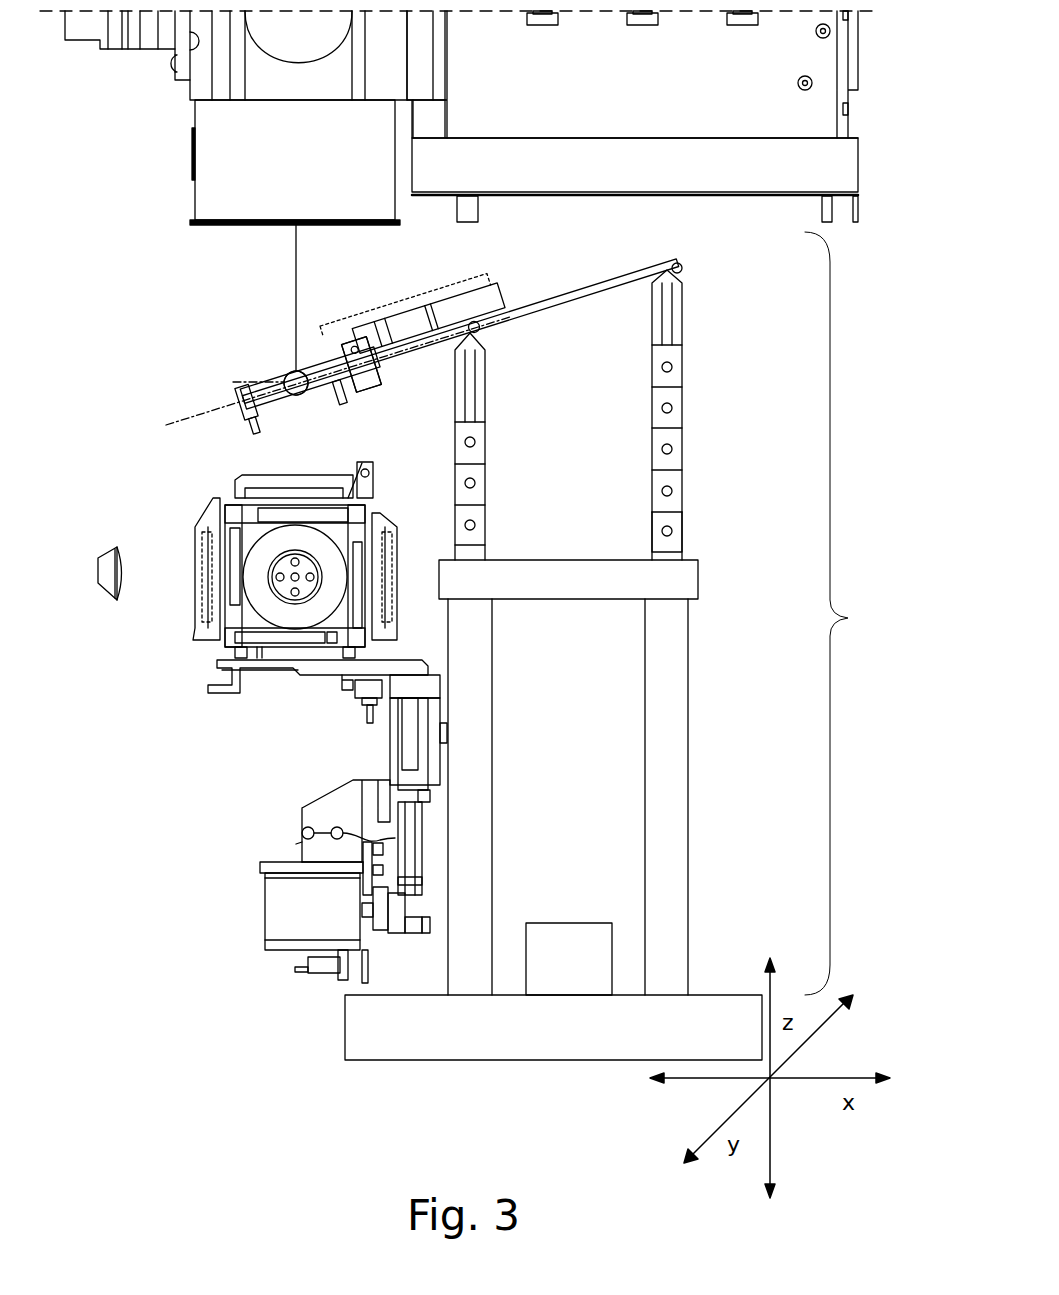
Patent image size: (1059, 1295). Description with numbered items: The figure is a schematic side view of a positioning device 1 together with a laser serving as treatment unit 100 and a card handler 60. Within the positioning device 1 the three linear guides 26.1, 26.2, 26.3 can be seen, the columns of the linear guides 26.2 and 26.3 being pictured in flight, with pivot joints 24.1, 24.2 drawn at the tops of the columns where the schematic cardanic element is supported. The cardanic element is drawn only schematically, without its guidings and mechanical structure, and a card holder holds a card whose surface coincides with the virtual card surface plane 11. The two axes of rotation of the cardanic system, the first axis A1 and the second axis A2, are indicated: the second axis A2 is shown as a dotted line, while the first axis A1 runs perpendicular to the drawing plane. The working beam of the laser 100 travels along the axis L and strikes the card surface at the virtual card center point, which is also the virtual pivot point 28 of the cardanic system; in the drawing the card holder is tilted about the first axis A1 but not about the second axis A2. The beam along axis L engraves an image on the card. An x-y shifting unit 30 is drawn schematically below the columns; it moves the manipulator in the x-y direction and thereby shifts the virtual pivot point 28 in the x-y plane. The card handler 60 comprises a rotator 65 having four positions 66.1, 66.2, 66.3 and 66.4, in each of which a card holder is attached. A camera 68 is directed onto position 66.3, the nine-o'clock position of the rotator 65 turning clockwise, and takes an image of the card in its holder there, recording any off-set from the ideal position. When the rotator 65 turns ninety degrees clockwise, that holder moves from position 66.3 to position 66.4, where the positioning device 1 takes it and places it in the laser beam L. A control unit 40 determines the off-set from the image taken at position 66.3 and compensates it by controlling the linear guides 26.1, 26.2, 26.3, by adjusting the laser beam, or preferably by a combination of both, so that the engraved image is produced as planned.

The positioning device 1 is at (853, 613).
The virtual card surface plane 11 is at (362, 365).
The virtual pivot point 28 is at (296, 383).
The first pivot joint 24.1 is at (480, 331).
The second pivot joint 24.2 is at (685, 269).
The linear guide 26.1 is at (478, 482).
The linear guide 26.2 is at (683, 515).
The linear guide 26.3 is at (683, 420).
The x-y shifting unit 30 is at (553, 1027).
The control unit 40 is at (569, 959).
The card handler 60 is at (183, 602).
The rotator 65 is at (272, 610).
The rotator position 66.1 is at (388, 578).
The rotator position 66.2 is at (285, 655).
The rotator position 66.3 is at (205, 578).
The rotator position 66.4 is at (245, 487).
The camera 68 is at (100, 573).
The treatment unit 100 is at (207, 155).
The axis of the laser beam L is at (297, 268).
The first axis of rotation A1 is at (283, 377).
The second axis of rotation A2 is at (331, 371).